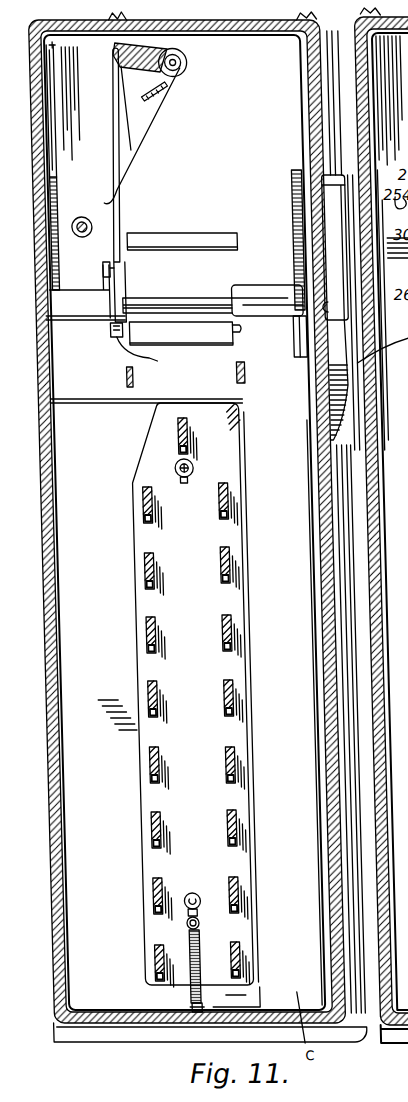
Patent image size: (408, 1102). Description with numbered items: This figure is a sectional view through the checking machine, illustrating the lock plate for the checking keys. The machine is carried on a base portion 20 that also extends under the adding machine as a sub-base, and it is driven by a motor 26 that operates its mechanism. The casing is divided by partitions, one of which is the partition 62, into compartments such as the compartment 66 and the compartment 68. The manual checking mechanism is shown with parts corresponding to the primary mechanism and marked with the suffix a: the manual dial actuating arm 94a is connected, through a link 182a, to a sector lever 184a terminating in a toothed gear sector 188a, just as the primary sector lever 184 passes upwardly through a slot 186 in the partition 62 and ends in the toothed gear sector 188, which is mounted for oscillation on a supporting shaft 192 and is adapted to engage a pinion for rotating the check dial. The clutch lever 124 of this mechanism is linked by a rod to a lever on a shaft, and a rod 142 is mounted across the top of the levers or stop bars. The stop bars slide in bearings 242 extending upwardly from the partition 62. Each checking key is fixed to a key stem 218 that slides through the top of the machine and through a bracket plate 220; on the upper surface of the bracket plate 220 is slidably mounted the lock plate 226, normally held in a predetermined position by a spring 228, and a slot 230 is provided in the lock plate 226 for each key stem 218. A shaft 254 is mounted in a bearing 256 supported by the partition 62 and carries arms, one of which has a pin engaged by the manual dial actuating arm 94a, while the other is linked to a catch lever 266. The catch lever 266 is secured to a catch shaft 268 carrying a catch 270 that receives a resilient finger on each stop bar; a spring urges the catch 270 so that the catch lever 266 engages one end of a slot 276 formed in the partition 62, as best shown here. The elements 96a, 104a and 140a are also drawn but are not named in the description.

The base portion 20 is at (330, 30).
The motor 26 is at (334, 247).
The partition 62 is at (213, 694).
The compartment 66 is at (345, 380).
The compartment 68 is at (287, 700).
The manual dial actuating arm 94a is at (140, 143).
The spring drum 96a is at (185, 64).
The pin 104a is at (172, 91).
The clutch lever 124 is at (372, 268).
The lug 140a is at (227, 370).
The rod 142 is at (381, 390).
The link 182a is at (120, 212).
The sector lever 184 is at (283, 352).
The sector lever 184a is at (121, 281).
The slot 186 is at (286, 342).
The toothed gear sector 188 is at (286, 243).
The toothed gear sector 188a is at (44, 279).
The supporting shaft 192 is at (159, 300).
The key stem 218 is at (139, 507).
The bracket plate 220 is at (219, 992).
The lock plate 226 is at (150, 698).
The spring 228 is at (175, 955).
The slot 230 is at (215, 517).
The bearings 242 is at (184, 241).
The shaft 254 is at (92, 242).
The bearing 256 is at (93, 196).
The catch lever 266 is at (153, 356).
The catch shaft 268 is at (252, 333).
The catch 270 is at (181, 333).
The slot 276 is at (109, 338).